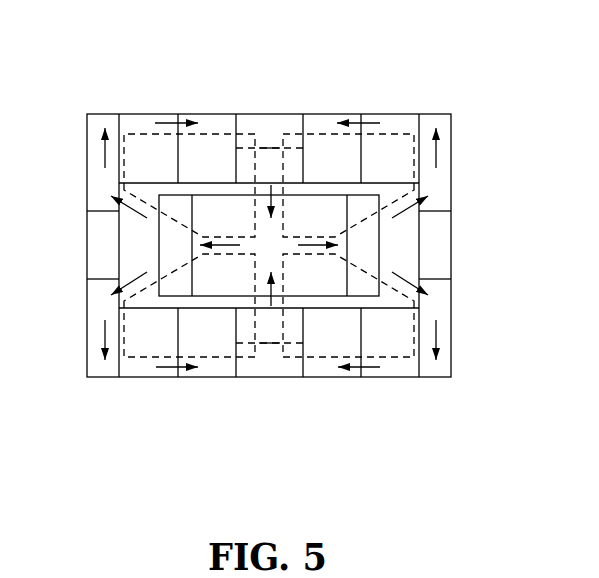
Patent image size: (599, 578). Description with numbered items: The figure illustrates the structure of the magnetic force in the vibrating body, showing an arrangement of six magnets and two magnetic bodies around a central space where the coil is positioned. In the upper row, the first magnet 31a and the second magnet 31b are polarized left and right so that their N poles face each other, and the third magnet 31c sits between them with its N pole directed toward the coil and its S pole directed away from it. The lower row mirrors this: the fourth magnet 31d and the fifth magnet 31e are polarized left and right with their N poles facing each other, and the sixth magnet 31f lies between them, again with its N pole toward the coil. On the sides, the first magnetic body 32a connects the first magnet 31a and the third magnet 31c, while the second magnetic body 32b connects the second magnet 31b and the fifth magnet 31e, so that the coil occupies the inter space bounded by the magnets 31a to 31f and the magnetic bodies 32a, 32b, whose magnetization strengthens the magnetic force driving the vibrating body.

The first magnet 31a is at (207, 128).
The second magnet 31b is at (385, 130).
The third magnet 31c is at (270, 113).
The fourth magnet 31d is at (145, 362).
The fifth magnet 31e is at (402, 365).
The sixth magnet 31f is at (270, 378).
The first magnetic body 32a is at (105, 125).
The second magnetic body 32b is at (438, 126).